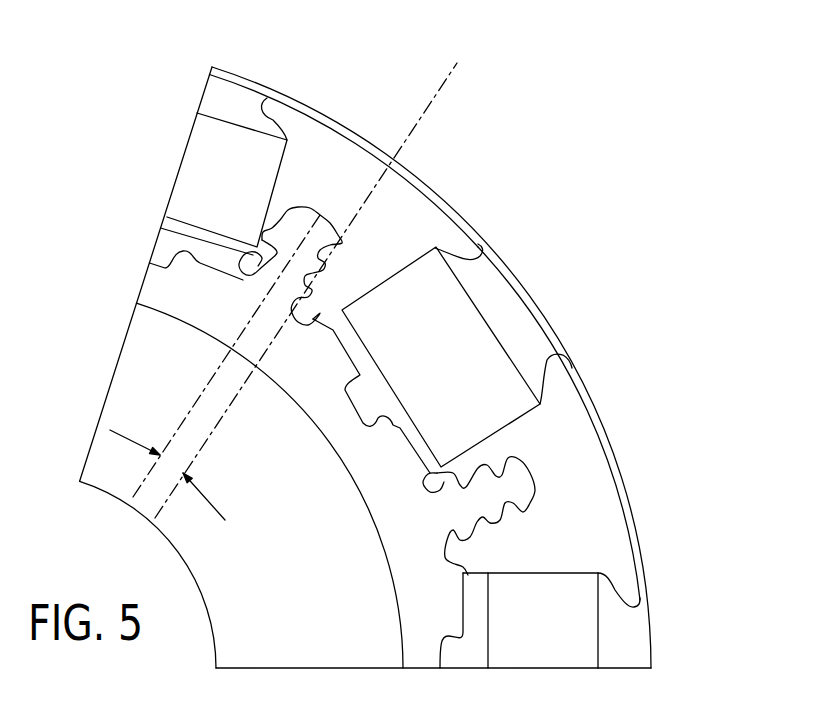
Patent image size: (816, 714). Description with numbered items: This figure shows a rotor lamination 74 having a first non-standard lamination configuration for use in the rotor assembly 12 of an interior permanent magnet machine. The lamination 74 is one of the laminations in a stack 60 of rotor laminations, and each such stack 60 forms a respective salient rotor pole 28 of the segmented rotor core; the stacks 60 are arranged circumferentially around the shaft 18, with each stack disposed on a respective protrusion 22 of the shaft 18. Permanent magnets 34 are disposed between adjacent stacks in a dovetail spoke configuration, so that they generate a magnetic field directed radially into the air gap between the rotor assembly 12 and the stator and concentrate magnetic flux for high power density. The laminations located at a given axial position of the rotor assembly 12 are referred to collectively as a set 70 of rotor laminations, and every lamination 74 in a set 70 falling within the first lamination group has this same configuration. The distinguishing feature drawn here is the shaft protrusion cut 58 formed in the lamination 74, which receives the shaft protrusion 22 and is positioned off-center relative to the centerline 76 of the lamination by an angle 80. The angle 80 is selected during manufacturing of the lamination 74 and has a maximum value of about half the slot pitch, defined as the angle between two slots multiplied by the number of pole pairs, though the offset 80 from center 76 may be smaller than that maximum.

The rotor assembly 12 is at (622, 98).
The shaft 18 is at (357, 437).
The protrusion 22 is at (257, 250).
The salient rotor pole 28 is at (313, 98).
The permanent magnet 34 is at (487, 322).
The shaft protrusion cut 58 is at (268, 268).
The stack of rotor laminations 60 is at (617, 392).
The set of rotor laminations 70 is at (597, 337).
The rotor lamination 74 is at (467, 160).
The centerline 76 is at (452, 73).
The angle 80 is at (210, 498).